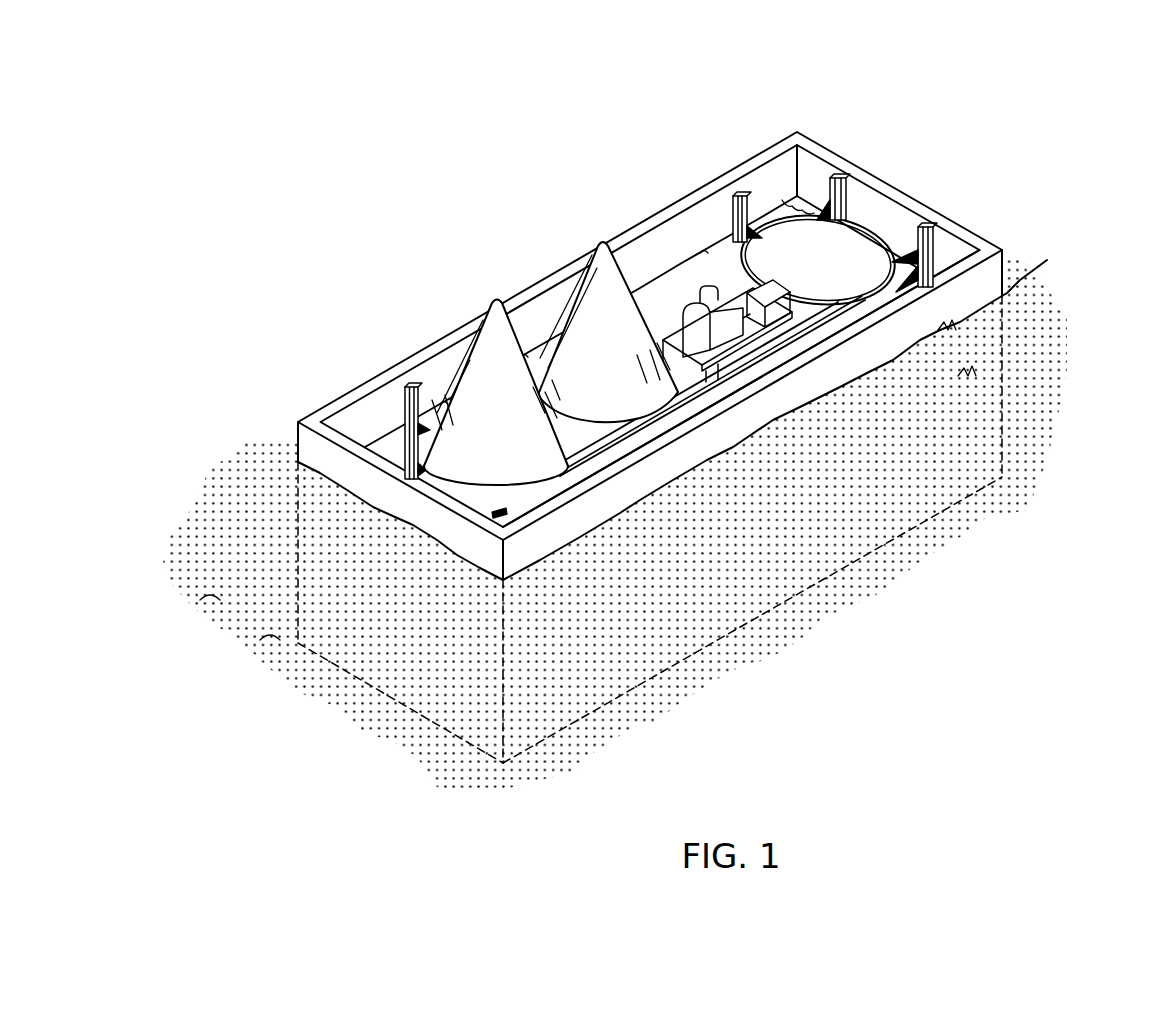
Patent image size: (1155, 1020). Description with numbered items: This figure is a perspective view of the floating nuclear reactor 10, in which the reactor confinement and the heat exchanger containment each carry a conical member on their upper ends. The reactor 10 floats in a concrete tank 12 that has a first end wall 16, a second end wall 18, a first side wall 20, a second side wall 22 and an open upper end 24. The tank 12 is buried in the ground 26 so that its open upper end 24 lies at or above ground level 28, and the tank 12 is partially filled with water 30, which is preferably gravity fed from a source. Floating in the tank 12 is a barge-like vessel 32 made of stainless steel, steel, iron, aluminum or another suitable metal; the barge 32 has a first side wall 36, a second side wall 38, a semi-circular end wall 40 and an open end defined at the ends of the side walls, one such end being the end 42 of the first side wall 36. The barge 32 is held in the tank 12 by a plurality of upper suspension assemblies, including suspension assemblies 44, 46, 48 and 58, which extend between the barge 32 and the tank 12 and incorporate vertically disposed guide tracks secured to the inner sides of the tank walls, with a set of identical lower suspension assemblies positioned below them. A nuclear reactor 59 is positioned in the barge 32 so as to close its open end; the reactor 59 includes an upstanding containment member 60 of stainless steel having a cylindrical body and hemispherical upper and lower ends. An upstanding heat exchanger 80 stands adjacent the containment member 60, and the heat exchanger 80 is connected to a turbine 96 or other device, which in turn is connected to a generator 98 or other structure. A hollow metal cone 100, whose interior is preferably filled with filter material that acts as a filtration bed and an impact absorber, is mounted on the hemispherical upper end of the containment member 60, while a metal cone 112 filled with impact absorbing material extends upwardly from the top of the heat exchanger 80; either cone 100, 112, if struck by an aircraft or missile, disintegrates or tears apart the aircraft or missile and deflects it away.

The floating nuclear reactor 10 is at (908, 162).
The concrete tank 12 is at (1016, 248).
The first end wall 16 is at (958, 233).
The second end wall 18 is at (437, 525).
The first side wall 20 is at (718, 435).
The second side wall 22 is at (648, 212).
The open upper end 24 is at (810, 157).
The ground 26 is at (422, 650).
The ground level 28 is at (297, 422).
The water 30 is at (383, 440).
The barge-like vessel 32 is at (950, 328).
The first side wall 36 is at (968, 372).
The second side wall 38 is at (760, 253).
The semi-circular end wall 40 is at (866, 242).
The end of first side wall 42 is at (540, 513).
The upper suspension assembly 44 is at (735, 188).
The upper suspension assembly 46 is at (844, 175).
The upper suspension assembly 48 is at (935, 236).
The upper suspension assembly 58 is at (408, 385).
The nuclear reactor 59 is at (516, 504).
The containment member 60 is at (487, 500).
The heat exchanger 80 is at (606, 440).
The turbine 96 is at (820, 368).
The generator 98 is at (842, 291).
The hollow metal cone 100 is at (494, 328).
The metal cone 112 is at (596, 266).